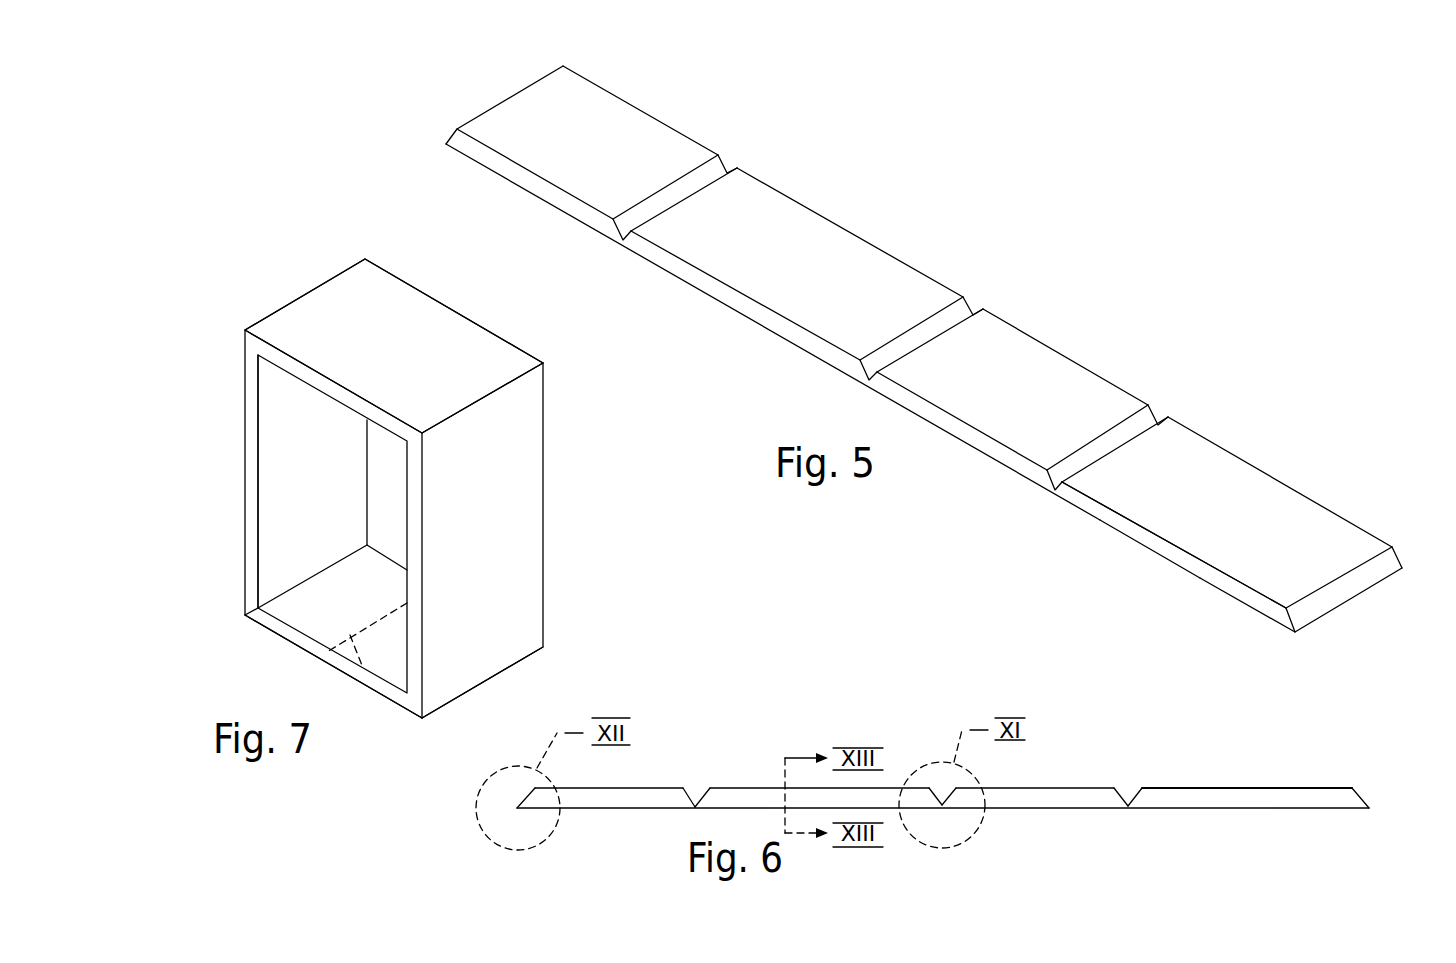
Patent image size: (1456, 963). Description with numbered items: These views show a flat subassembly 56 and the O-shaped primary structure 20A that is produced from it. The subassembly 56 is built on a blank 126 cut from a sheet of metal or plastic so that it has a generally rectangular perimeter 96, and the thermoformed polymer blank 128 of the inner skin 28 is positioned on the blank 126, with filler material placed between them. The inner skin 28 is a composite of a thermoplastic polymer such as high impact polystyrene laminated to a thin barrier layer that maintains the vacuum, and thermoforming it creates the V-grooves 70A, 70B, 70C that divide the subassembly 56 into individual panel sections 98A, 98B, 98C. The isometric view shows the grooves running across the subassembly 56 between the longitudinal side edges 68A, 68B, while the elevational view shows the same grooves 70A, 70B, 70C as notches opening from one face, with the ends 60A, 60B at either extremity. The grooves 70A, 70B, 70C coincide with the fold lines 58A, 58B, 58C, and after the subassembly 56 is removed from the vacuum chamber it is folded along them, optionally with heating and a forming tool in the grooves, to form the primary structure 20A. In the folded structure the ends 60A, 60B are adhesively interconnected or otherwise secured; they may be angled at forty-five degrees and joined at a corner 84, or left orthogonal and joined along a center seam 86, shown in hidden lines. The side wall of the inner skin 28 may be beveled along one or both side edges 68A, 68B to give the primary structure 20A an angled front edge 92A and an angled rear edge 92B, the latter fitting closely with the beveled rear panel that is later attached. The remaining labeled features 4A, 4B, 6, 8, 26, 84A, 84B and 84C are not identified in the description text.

In FIG. 7, the first side wall 4A is at (243, 463).
In FIG. 7, the second side wall 4B is at (523, 543).
In FIG. 7, the top wall 6 is at (405, 312).
In FIG. 7, the bottom edge 8 is at (315, 625).
In FIG. 7, the O-shaped primary structure 20A is at (307, 287).
In FIG. 5, the bottom surface of strip 26 is at (1183, 570).
In FIG. 6, the bottom surface of strip 26 is at (1197, 810).
In FIG. 5, the inner skin 28 is at (1200, 452).
In FIG. 6, the inner skin 28 is at (1200, 788).
In FIG. 5, the subassembly 56 is at (1265, 465).
In FIG. 6, the subassembly 56 is at (1245, 786).
In FIG. 5, the fold line 58A is at (617, 243).
In FIG. 6, the fold line 58A is at (694, 803).
In FIG. 5, the fold line 58B is at (867, 382).
In FIG. 6, the fold line 58B is at (942, 803).
In FIG. 5, the fold line 58C is at (1052, 487).
In FIG. 6, the fold line 58C is at (1128, 805).
In FIG. 5, the end of subassembly 60A is at (497, 103).
In FIG. 6, the end of subassembly 60A is at (530, 795).
In FIG. 5, the end of subassembly 60B is at (1327, 607).
In FIG. 6, the end of subassembly 60B is at (1362, 803).
In FIG. 5, the side edge 68A is at (957, 440).
In FIG. 5, the side edge 68B is at (1058, 350).
In FIG. 5, the V-groove 70A is at (698, 180).
In FIG. 6, the V-groove 70A is at (707, 795).
In FIG. 5, the V-groove 70B is at (940, 325).
In FIG. 6, the V-groove 70B is at (950, 788).
In FIG. 5, the V-groove 70C is at (1130, 415).
In FIG. 6, the V-groove 70C is at (1133, 788).
In FIG. 7, the corner 84 is at (245, 615).
In FIG. 7, the top left edge 84A is at (268, 313).
In FIG. 7, the top right edge 84B is at (500, 392).
In FIG. 7, the bottom right edge 84C is at (508, 670).
In FIG. 7, the center seam 86 is at (363, 668).
In FIG. 7, the angled front edge 92A is at (242, 520).
In FIG. 7, the angled rear edge 92B is at (367, 518).
In FIG. 5, the rectangular perimeter 96 is at (1240, 600).
In FIG. 5, the panel section 98A is at (620, 120).
In FIG. 5, the panel section 98B is at (840, 250).
In FIG. 5, the panel section 98C is at (1283, 520).
In FIG. 5, the outer skin blank 126 is at (1140, 543).
In FIG. 5, the polymer blank 128 is at (1347, 538).